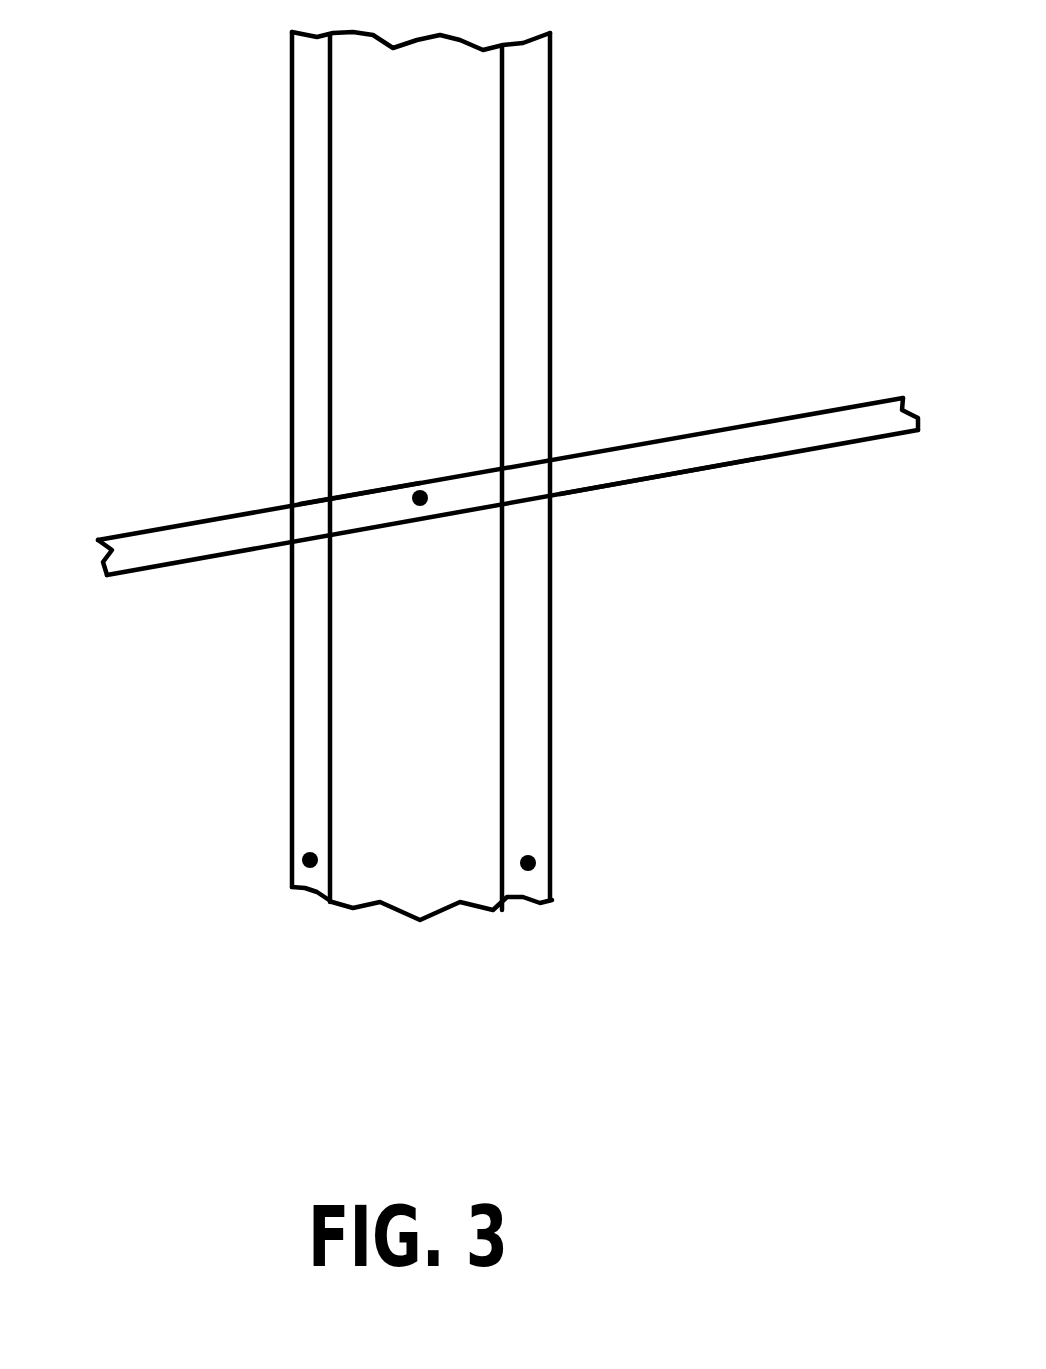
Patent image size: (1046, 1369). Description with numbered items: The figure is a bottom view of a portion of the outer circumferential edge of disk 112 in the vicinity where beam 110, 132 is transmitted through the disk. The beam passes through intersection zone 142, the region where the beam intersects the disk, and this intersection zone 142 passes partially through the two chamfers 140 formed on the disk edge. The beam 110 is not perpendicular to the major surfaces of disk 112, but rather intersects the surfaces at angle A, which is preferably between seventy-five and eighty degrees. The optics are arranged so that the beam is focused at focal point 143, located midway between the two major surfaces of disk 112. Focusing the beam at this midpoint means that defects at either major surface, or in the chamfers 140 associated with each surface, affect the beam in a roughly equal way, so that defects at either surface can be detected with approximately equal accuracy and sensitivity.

The beam 110 is at (157, 570).
The disk 112 is at (292, 110).
The beam 132 is at (653, 482).
The chamfers 140 is at (309, 868).
The intersection zone 142 is at (357, 490).
The focal point 143 is at (424, 506).
The angle A is at (553, 222).